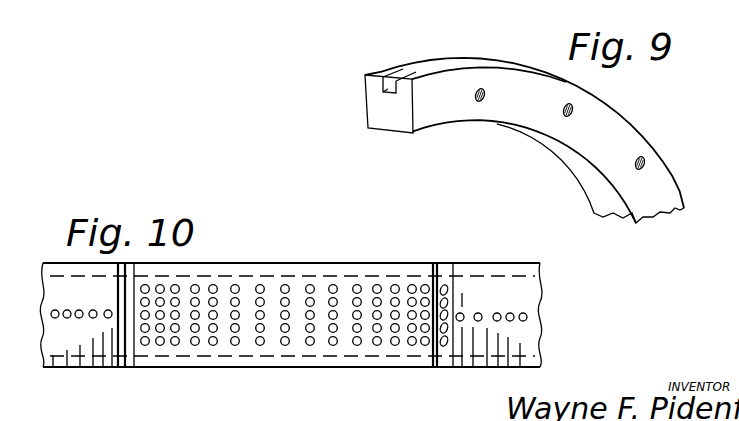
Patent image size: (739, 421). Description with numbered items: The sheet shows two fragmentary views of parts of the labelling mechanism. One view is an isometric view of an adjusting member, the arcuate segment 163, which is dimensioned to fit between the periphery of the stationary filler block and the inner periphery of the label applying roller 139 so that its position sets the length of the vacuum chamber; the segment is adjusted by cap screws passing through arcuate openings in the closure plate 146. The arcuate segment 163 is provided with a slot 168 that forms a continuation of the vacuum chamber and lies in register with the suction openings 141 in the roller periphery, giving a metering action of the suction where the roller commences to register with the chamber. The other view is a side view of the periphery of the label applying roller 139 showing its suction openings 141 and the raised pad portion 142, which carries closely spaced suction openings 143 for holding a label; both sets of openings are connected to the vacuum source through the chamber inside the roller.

In FIG. 10, the label applying roller 139 is at (520, 250).
In FIG. 10, the suction openings 141 is at (107, 320).
In FIG. 10, the raised pad portion 142 is at (410, 361).
In FIG. 10, the closely spaced suction openings 143 is at (311, 285).
In FIG. 10, the closure plate 146 is at (397, 362).
In FIG. 9, the arcuate segment 163 is at (642, 140).
In FIG. 9, the slot 168 is at (397, 83).